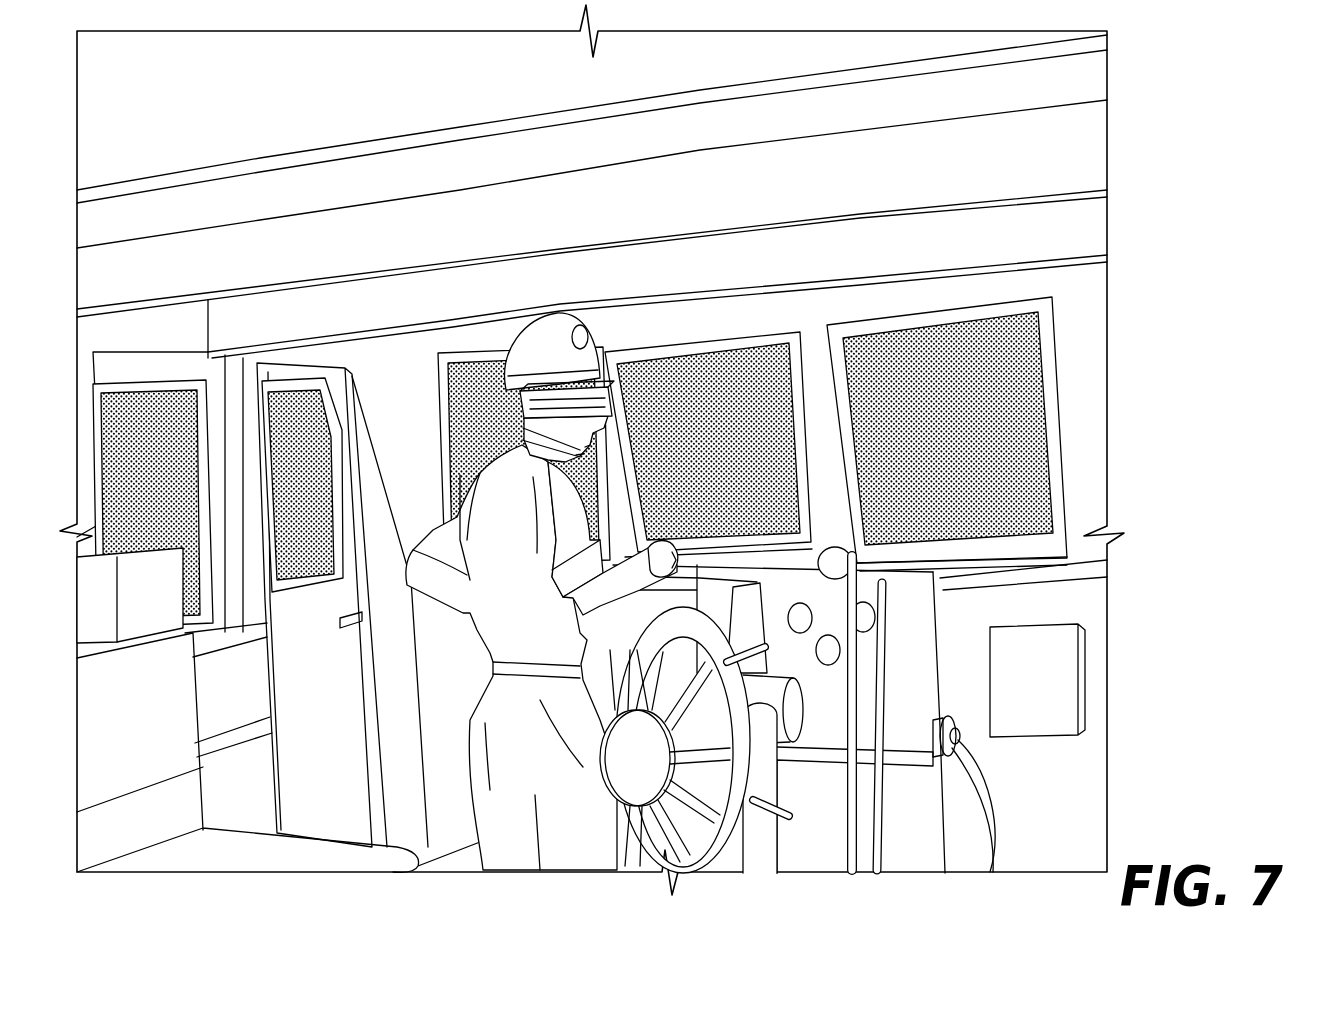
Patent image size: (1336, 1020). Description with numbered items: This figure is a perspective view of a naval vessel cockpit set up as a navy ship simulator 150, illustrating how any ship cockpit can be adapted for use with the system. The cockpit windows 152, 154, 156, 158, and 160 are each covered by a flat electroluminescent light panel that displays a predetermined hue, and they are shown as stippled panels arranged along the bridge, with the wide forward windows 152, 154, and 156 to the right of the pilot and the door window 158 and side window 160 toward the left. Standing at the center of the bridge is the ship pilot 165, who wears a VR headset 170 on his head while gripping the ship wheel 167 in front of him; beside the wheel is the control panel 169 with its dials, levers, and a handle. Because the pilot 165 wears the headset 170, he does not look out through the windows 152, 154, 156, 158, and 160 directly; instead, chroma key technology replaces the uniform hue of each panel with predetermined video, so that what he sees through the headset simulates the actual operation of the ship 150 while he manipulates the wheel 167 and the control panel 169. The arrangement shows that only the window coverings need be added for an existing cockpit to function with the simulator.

The navy ship simulator 150 is at (778, 305).
The window 152 is at (907, 342).
The window 154 is at (670, 370).
The window 156 is at (485, 373).
The window 158 is at (293, 403).
The window 160 is at (150, 407).
The ship pilot 165 is at (575, 853).
The ship wheel 167 is at (707, 853).
The control panel 169 is at (908, 727).
The head-mounted display 170 is at (573, 407).